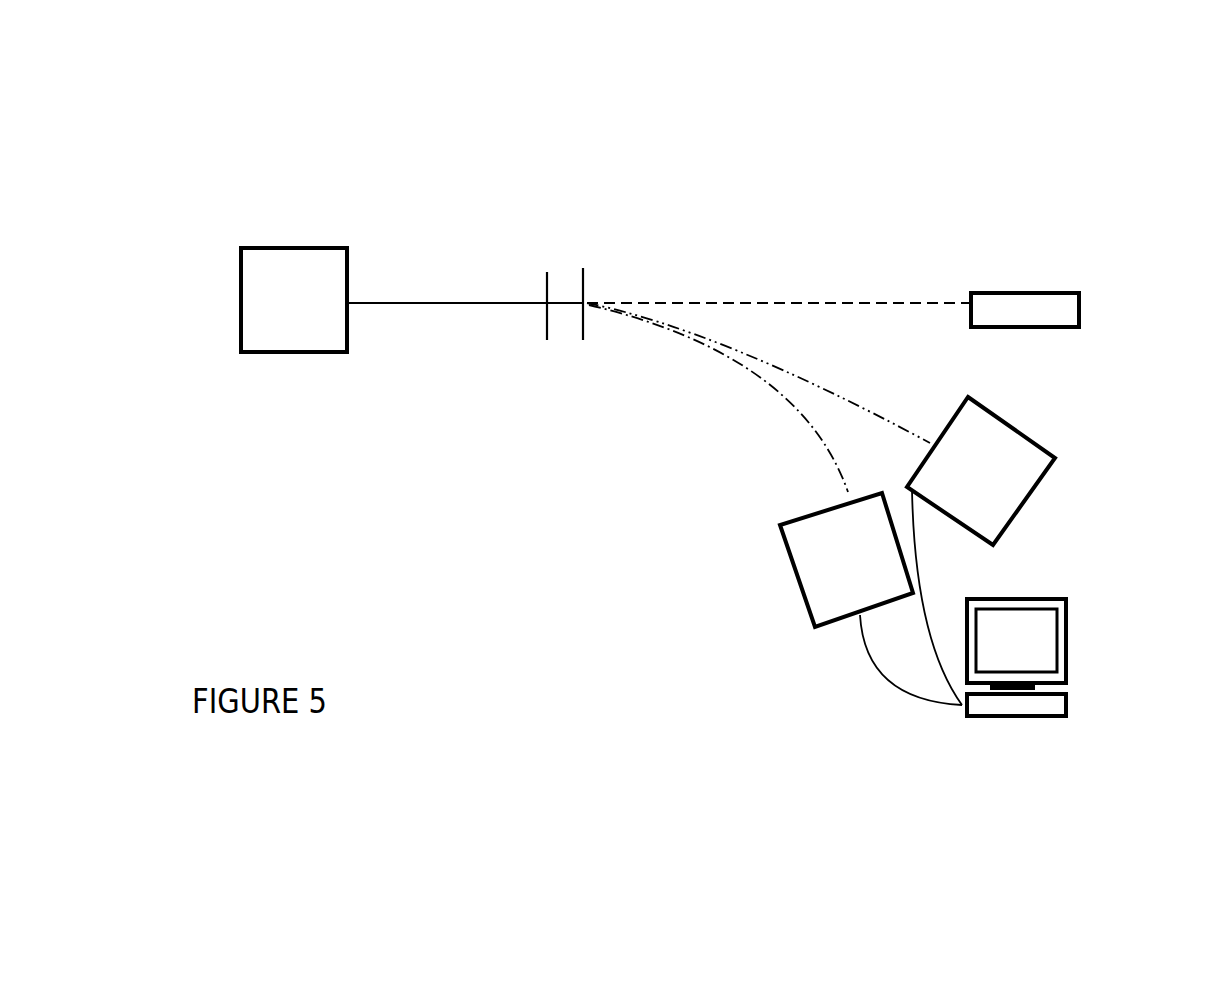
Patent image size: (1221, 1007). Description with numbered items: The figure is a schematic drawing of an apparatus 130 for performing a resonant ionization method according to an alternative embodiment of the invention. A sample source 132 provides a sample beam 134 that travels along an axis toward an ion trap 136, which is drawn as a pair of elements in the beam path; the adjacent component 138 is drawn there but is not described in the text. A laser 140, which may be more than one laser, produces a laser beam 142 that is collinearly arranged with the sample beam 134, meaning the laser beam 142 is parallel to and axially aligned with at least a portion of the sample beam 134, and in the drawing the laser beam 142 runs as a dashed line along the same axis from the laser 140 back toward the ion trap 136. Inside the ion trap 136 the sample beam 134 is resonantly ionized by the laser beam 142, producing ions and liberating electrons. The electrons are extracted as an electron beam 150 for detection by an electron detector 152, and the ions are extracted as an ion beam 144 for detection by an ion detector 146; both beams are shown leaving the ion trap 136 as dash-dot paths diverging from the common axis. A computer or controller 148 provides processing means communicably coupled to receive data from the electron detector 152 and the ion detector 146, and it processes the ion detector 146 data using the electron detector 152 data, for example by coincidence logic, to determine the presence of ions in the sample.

The apparatus 130 is at (496, 88).
The sample source 132 is at (337, 353).
The sample beam 134 is at (525, 303).
The ion trap 136 is at (585, 312).
The lens 138 is at (562, 303).
The laser 140 is at (1027, 328).
The laser beam 142 is at (877, 303).
The ion beam 144 is at (915, 435).
The ion detector 146 is at (1023, 515).
The computer or controller 148 is at (1070, 647).
The electron beam 150 is at (842, 468).
The electron detector 152 is at (800, 610).